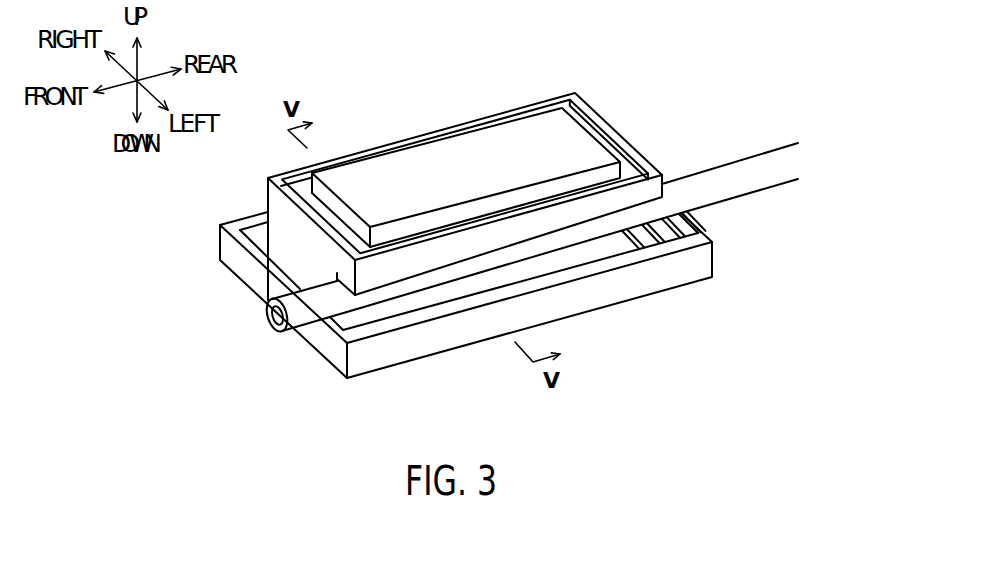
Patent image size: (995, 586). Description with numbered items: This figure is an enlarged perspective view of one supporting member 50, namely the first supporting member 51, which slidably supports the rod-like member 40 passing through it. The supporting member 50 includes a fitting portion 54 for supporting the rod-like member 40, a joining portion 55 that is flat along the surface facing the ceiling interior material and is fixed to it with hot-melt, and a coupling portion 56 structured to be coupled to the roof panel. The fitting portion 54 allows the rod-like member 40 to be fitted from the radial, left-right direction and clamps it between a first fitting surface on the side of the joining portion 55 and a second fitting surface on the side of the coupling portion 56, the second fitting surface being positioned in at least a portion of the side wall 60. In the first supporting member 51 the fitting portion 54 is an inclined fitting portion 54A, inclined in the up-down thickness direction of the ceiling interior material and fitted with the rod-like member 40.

The rod-like member 40 is at (743, 175).
The supporting member 50 is at (484, 174).
The first supporting member 51 is at (613, 130).
The fitting portion 54 is at (531, 295).
The inclined fitting portion 54A is at (545, 230).
The joining portion 55 is at (455, 350).
The coupling portion 56 is at (473, 148).
The side wall 60 is at (256, 276).